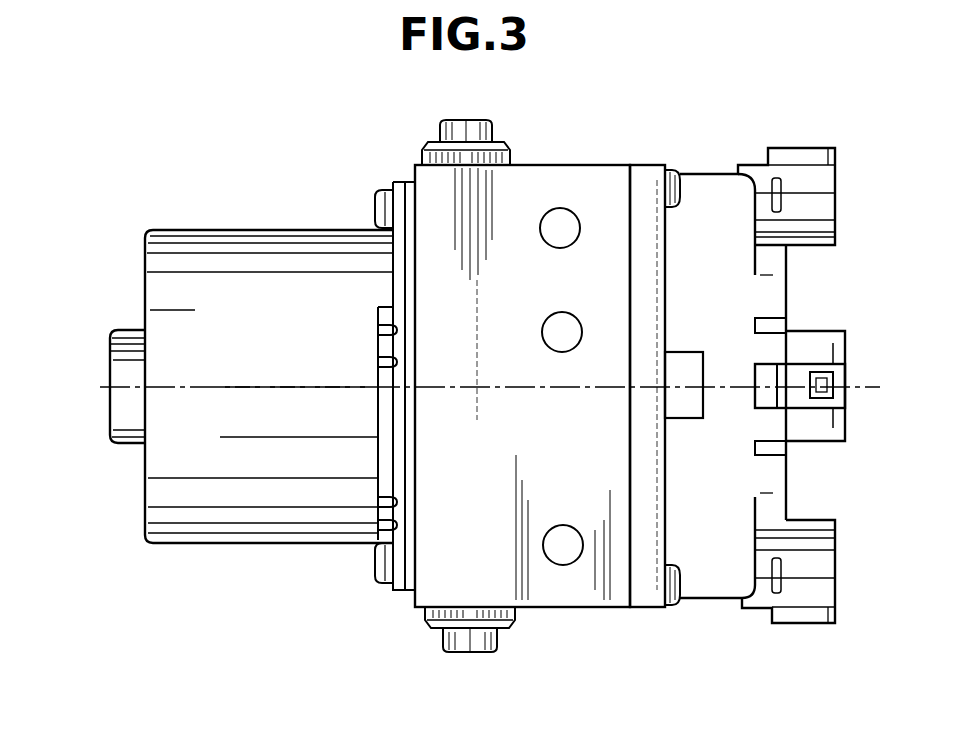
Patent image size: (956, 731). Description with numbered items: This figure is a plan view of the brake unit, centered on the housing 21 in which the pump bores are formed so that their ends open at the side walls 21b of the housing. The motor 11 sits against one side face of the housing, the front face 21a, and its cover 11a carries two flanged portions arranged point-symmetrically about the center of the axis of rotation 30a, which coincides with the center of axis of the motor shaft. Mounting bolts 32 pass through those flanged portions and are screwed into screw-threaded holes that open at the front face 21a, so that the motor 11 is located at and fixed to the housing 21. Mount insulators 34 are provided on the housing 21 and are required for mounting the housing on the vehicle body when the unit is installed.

The motor 11 is at (256, 221).
The cover 11a is at (158, 277).
The center of axis of rotation 30a is at (218, 385).
The housing 21 is at (566, 165).
The front face 21a is at (415, 212).
The side wall 21b is at (608, 166).
The mounting bolt 32 is at (375, 213).
The mount insulator 34 is at (463, 128).